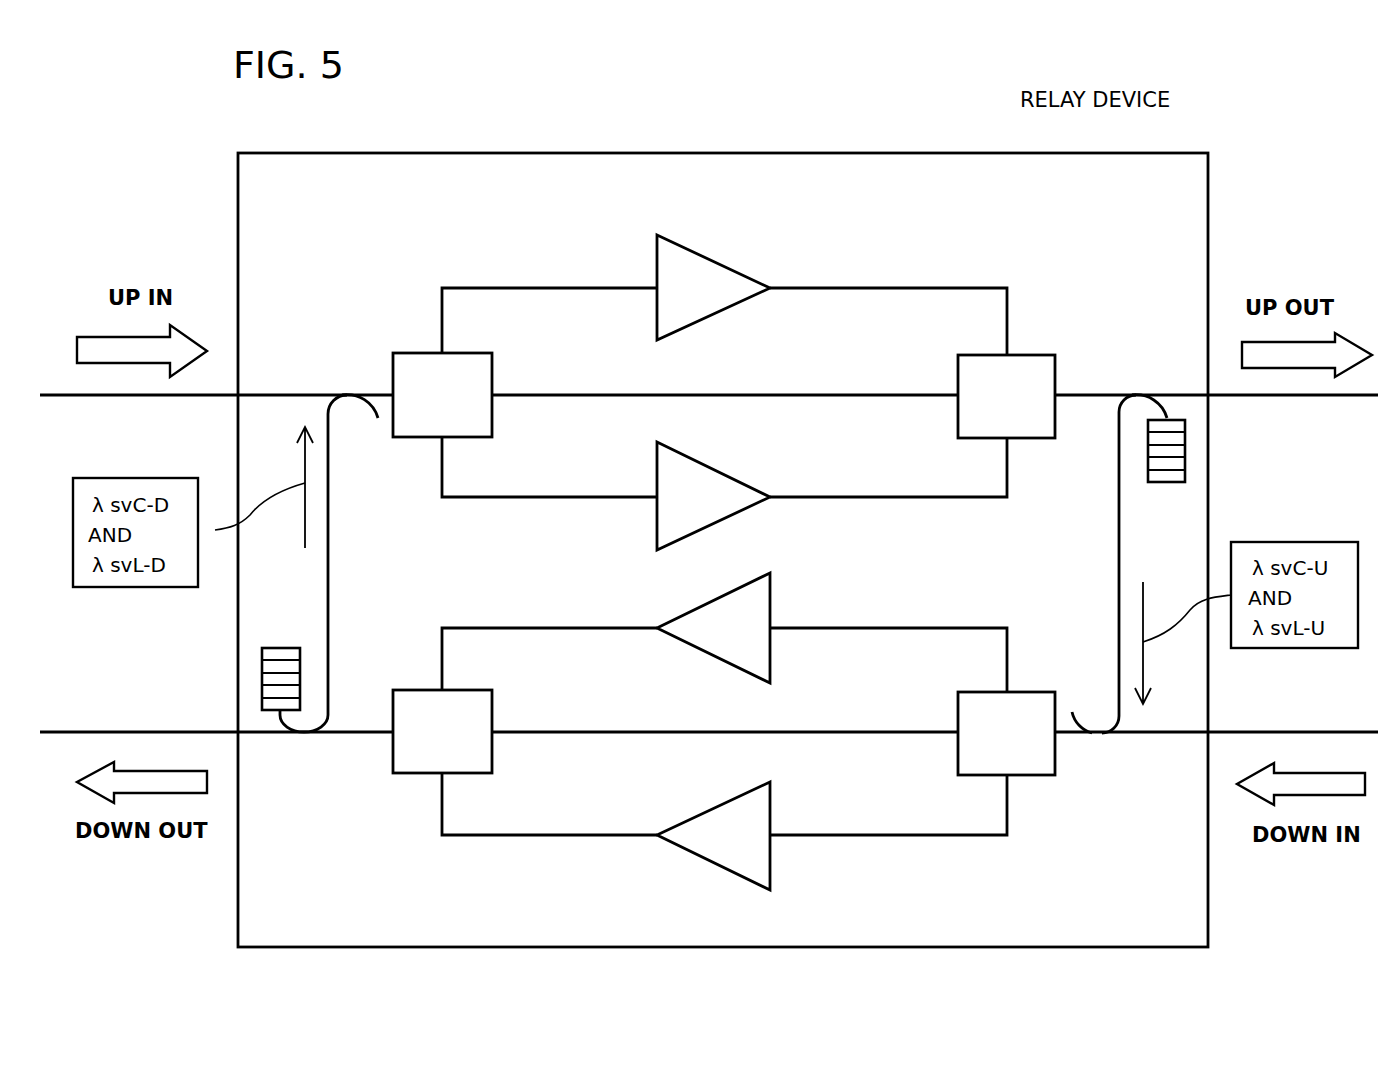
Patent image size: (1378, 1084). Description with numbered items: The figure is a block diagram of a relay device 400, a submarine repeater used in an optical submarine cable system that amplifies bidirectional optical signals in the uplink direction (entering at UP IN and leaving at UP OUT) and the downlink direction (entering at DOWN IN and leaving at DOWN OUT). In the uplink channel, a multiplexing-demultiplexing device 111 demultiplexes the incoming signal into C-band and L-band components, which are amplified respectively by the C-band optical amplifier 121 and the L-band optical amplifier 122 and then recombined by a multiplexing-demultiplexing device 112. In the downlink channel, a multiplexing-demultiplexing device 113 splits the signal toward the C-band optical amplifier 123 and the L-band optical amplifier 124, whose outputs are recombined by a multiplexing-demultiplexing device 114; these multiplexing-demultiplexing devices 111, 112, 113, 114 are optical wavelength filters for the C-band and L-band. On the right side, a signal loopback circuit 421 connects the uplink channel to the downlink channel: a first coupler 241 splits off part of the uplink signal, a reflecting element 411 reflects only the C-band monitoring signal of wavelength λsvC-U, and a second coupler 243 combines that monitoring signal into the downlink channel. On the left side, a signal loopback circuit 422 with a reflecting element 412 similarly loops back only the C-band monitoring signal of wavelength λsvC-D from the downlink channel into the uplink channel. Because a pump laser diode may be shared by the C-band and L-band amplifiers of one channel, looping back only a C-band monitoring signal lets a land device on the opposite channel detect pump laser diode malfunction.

The relay device 400 is at (950, 152).
The multiplexing-demultiplexing device 111 is at (412, 352).
The multiplexing-demultiplexing device 112 is at (1030, 355).
The multiplexing-demultiplexing device 113 is at (1030, 692).
The multiplexing-demultiplexing device 114 is at (420, 690).
The optical amplifier 121 is at (702, 250).
The optical amplifier 122 is at (712, 462).
The optical amplifier 123 is at (708, 655).
The optical amplifier 124 is at (708, 862).
The first coupler 241 is at (1140, 398).
The second coupler 243 is at (1090, 736).
The reflecting element 411 is at (1188, 460).
The reflecting element 412 is at (262, 672).
The signal loopback circuit 421 is at (1117, 585).
The signal loopback circuit 422 is at (330, 580).